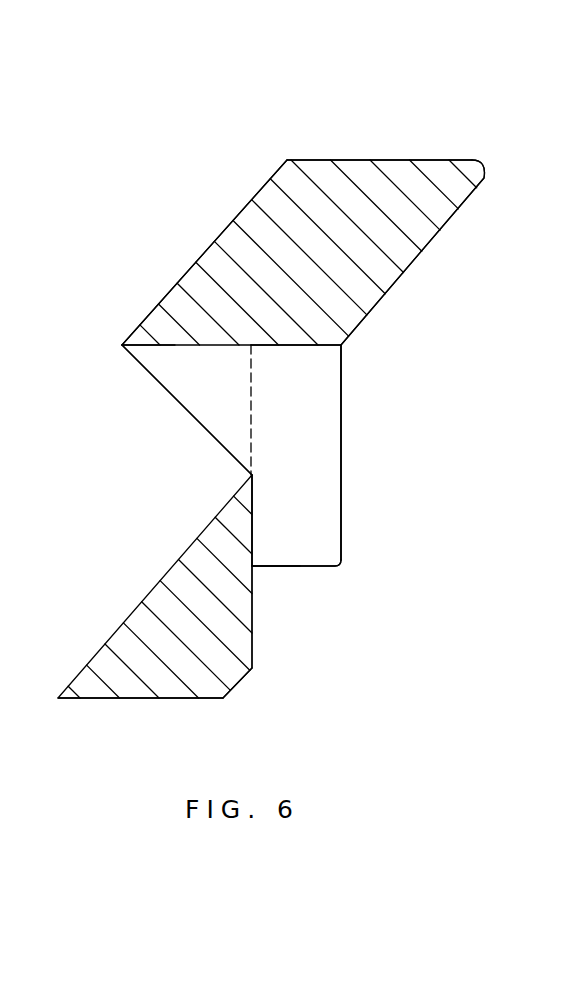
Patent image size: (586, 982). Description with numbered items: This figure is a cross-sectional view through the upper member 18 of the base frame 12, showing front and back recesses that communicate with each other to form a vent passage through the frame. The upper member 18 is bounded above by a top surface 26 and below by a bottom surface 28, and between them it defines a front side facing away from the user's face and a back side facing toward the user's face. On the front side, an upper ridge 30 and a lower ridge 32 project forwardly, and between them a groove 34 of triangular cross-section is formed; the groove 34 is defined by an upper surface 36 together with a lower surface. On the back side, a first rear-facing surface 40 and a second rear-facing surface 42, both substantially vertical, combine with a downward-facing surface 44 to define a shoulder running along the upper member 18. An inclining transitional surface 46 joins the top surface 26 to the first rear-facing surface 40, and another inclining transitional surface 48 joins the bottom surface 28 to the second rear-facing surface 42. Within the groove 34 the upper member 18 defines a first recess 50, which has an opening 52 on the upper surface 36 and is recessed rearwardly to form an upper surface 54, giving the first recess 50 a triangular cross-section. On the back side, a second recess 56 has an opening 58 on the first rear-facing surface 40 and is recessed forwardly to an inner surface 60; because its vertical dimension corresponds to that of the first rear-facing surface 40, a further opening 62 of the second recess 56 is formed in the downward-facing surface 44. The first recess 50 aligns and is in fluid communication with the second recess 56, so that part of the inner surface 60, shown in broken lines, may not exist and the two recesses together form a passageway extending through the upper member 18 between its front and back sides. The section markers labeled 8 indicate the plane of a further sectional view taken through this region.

The base frame 12 is at (280, 444).
The upper member 18 is at (317, 176).
The top surface 26 is at (440, 160).
The bottom surface 28 is at (163, 698).
The upper ridge 30 is at (151, 324).
The lower ridge 32 is at (103, 672).
The groove 34 is at (179, 492).
The upper surface 36 is at (157, 380).
The first rear-facing surface 40 is at (341, 385).
The second rear-facing surface 42 is at (252, 647).
The downward-facing surface 44 is at (300, 566).
The inclining transitional surface 46 is at (460, 212).
The inclining transitional surface 48 is at (237, 685).
The first recess 50 is at (231, 403).
The opening 52 is at (183, 405).
The upper surface 54 is at (175, 347).
The second recess 56 is at (306, 460).
The opening 58 is at (341, 432).
The inner surface 60 is at (252, 492).
The opening 62 is at (275, 566).
The section line 8- 8 is at (130, 615).